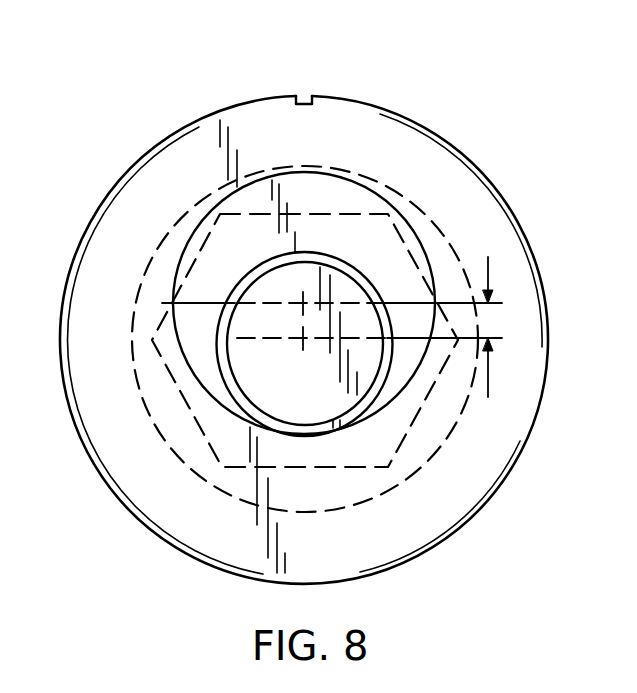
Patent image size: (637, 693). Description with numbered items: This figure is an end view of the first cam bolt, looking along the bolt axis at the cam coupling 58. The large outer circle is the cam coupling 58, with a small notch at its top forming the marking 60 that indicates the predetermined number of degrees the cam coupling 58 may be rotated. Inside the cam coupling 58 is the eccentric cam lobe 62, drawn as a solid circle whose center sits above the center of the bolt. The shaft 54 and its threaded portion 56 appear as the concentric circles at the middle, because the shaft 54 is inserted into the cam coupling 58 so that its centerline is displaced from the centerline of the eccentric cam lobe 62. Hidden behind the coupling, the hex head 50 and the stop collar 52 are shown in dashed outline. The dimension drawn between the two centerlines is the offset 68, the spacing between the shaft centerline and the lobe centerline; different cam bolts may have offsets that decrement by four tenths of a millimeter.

The hex head 50 is at (200, 430).
The stop collar 52 is at (156, 428).
The shaft 54 is at (250, 357).
The threaded portion 56 is at (350, 265).
The cam coupling 58 is at (448, 142).
The marking 60 is at (307, 93).
The eccentric cam lobe 62 is at (335, 193).
The offset 68 is at (490, 270).